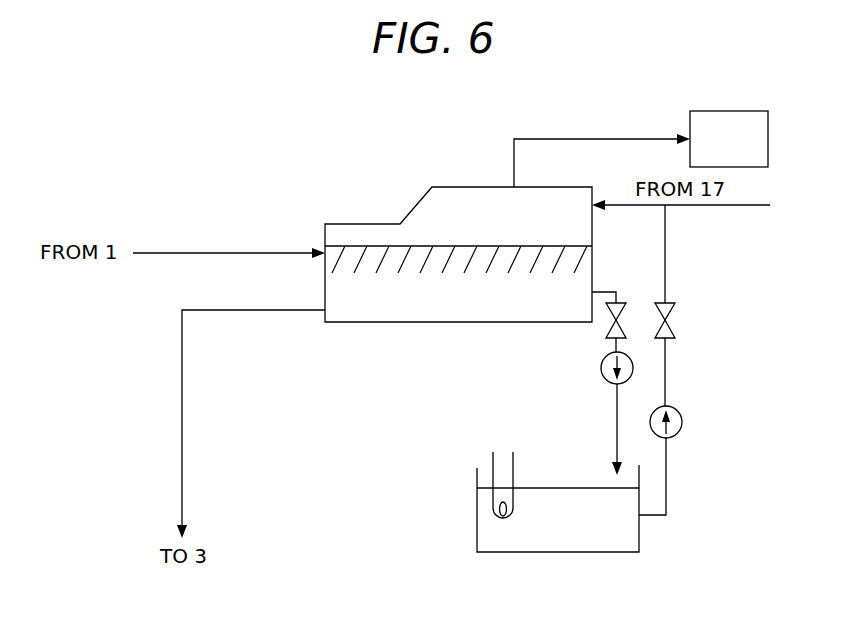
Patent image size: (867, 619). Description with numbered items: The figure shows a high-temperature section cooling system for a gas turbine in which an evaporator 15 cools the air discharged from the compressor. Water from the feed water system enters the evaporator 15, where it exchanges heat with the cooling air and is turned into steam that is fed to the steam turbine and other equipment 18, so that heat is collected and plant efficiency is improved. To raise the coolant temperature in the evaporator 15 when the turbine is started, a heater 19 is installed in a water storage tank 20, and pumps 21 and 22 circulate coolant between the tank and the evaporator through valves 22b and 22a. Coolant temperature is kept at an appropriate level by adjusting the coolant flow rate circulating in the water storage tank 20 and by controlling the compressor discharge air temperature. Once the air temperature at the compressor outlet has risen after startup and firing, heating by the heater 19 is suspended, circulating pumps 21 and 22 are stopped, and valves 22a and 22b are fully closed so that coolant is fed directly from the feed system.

The evaporator 15 is at (401, 323).
The steam turbine and other equipment 18 is at (742, 151).
The heater 19 is at (493, 455).
The water storage tank 20 is at (602, 547).
The pump 21 is at (600, 365).
The pump 22 is at (683, 421).
The valve 22a is at (676, 318).
The valve 22b is at (620, 303).